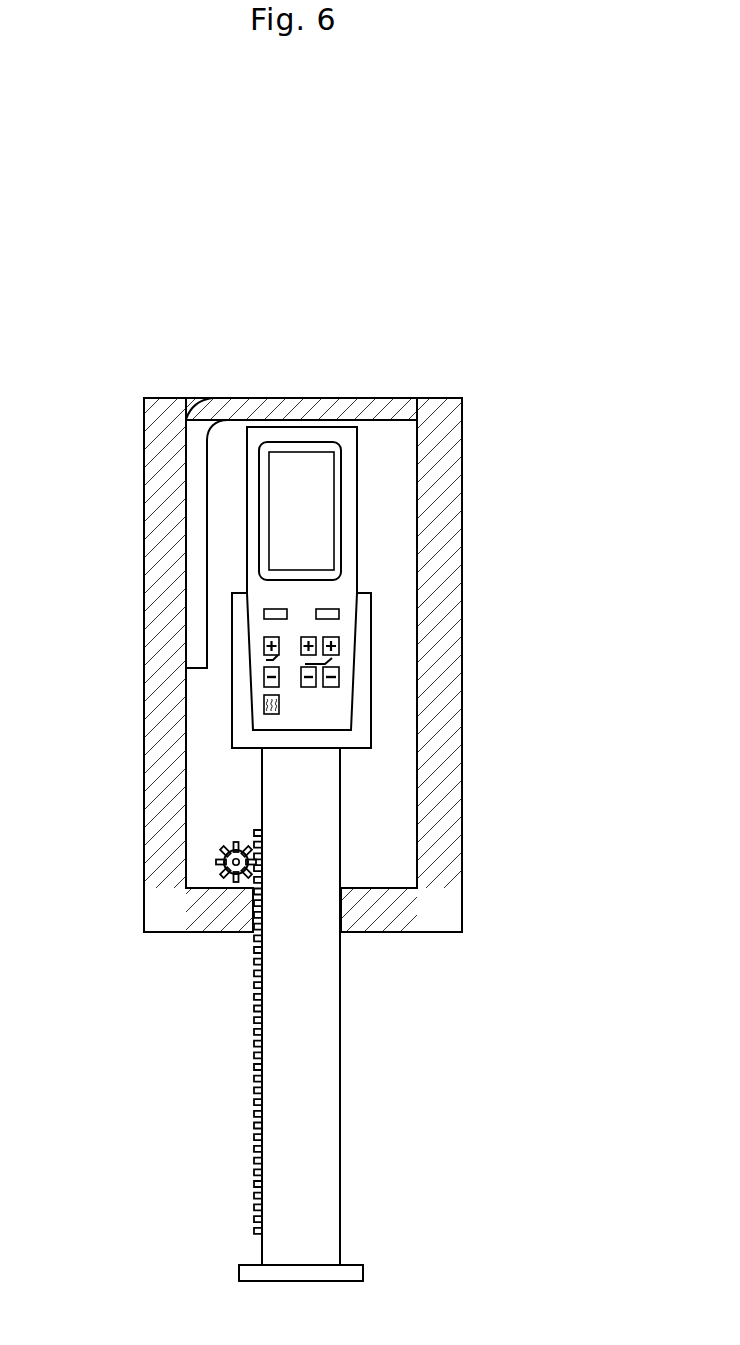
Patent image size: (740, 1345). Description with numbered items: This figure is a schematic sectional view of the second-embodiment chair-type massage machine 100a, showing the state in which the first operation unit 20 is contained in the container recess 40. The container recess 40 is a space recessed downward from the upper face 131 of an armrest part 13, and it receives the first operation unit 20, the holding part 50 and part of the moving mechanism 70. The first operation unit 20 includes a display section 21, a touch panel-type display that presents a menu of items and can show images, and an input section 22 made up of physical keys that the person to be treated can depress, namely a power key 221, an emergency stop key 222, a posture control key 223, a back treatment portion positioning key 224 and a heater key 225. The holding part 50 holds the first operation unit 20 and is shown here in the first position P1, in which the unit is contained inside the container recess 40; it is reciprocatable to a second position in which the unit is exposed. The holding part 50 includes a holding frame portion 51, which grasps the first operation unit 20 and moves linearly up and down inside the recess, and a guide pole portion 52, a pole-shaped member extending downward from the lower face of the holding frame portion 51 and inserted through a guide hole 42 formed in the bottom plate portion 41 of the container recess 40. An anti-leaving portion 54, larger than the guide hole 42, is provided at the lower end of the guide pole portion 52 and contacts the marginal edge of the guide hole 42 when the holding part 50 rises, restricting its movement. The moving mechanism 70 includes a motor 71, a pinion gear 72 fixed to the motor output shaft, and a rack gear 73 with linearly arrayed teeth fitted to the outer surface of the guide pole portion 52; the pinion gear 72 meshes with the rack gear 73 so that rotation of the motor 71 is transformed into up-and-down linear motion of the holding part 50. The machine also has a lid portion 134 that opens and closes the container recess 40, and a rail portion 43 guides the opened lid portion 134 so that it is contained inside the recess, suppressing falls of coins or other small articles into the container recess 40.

The chair-type massage machine 100a is at (202, 353).
The armrest part 13 is at (152, 437).
The upper face 131 is at (152, 398).
The lid portion 134 is at (373, 400).
The rail portion 43 is at (193, 518).
The container recess 40 is at (410, 440).
The bottom plate portion 41 is at (400, 915).
The guide hole 42 is at (340, 898).
The first position P1 is at (367, 558).
The first operation unit 20 is at (318, 427).
The display section 21 is at (287, 460).
The input section 22 is at (255, 603).
The power key 221 is at (264, 614).
The emergency stop key 222 is at (340, 615).
The posture control key 223 is at (337, 663).
The back treatment portion positioning key 224 is at (263, 658).
The heater key 225 is at (264, 705).
The holding part 50 is at (235, 588).
The holding frame portion 51 is at (240, 735).
The guide pole portion 52 is at (328, 1087).
The anti-leaving portion 54 is at (353, 1273).
The moving mechanism 70 is at (205, 845).
The motor 71 is at (217, 852).
The pinion gear 72 is at (217, 873).
The rack gear 73 is at (253, 963).